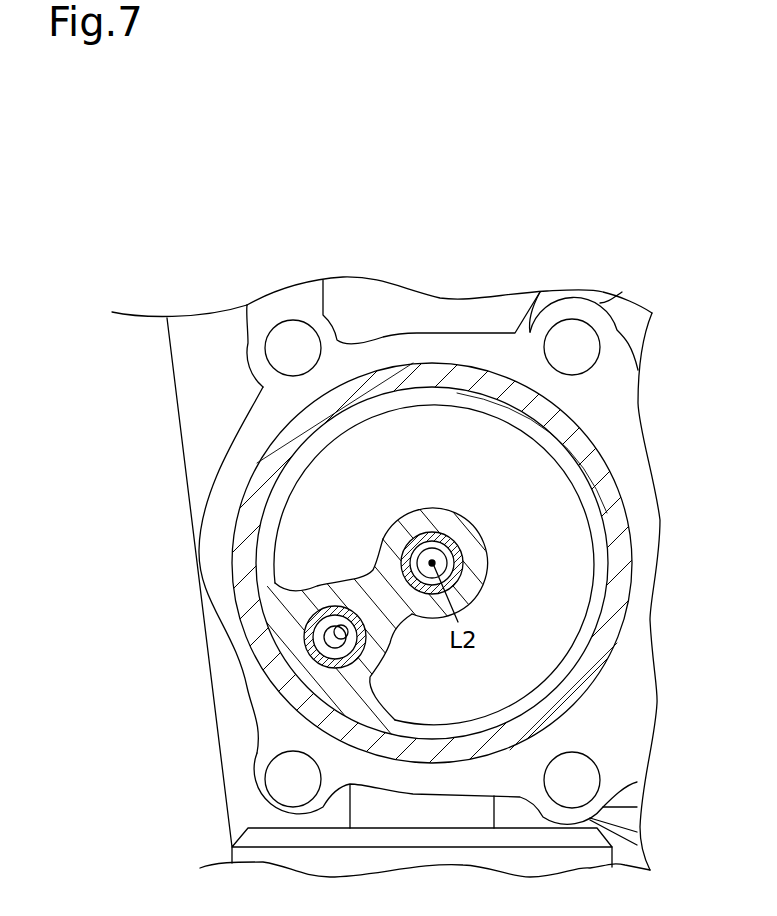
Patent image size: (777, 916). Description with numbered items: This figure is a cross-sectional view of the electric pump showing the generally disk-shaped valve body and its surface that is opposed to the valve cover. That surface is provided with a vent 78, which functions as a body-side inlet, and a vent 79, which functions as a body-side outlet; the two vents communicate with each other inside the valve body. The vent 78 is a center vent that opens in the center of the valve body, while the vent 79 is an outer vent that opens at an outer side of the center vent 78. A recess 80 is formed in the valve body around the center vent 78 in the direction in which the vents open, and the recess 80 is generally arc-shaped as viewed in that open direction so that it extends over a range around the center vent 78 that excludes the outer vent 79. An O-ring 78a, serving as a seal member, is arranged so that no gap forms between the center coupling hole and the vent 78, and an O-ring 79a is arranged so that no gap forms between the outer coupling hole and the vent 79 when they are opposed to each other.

The vent 78 is at (434, 563).
The O-ring 78a is at (436, 535).
The vent 79 is at (336, 637).
The O-ring 79a is at (316, 609).
The recess 80 is at (540, 457).